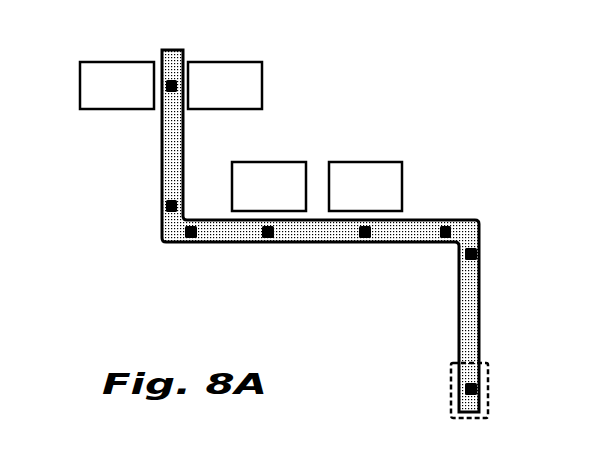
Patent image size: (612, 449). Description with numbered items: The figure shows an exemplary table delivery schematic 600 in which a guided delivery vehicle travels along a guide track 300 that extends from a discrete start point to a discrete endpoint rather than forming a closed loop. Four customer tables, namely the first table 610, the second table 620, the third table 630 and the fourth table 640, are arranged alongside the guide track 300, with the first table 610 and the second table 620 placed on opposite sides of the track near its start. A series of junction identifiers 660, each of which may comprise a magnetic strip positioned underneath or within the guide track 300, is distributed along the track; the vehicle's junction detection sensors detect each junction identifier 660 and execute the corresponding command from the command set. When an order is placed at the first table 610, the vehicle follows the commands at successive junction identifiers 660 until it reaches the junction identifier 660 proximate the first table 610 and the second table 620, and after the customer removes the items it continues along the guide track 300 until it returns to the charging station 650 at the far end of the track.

The table delivery schematic 600 is at (448, 84).
The guide track 300 is at (476, 302).
The Table 1 610 is at (102, 62).
The Table 2 620 is at (243, 62).
The Table 3 630 is at (279, 162).
The Table 4 640 is at (389, 162).
The charging station 650 is at (452, 400).
The junction identifier 660 is at (165, 203).